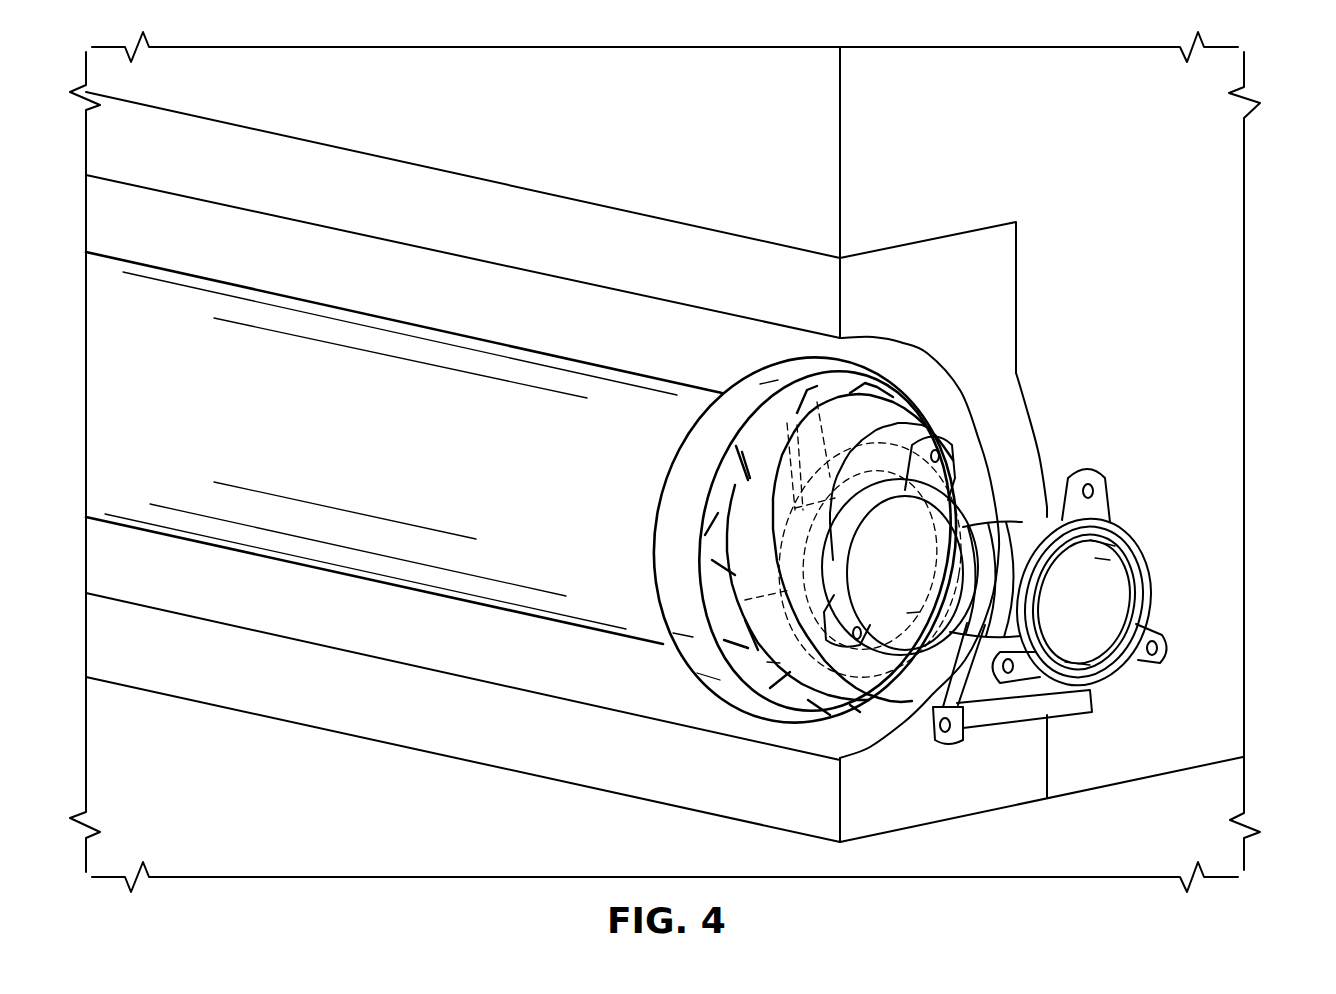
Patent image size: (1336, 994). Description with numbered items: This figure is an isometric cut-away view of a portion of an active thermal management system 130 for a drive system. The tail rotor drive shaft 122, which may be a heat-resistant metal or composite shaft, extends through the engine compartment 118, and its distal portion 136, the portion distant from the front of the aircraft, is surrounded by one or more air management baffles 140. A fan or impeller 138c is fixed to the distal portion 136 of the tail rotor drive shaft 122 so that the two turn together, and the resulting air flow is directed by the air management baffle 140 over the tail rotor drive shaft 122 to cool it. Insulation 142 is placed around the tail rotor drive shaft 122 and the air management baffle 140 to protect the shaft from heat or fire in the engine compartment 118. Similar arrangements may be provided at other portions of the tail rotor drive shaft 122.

The active thermal management system 130 is at (1277, 79).
The engine compartment 118 is at (682, 123).
The insulation 142 is at (632, 261).
The air management baffle 140 is at (527, 316).
The tail rotor drive shaft 122 is at (418, 467).
The fan or impeller 138c is at (880, 376).
The distal portion 136 is at (1062, 435).